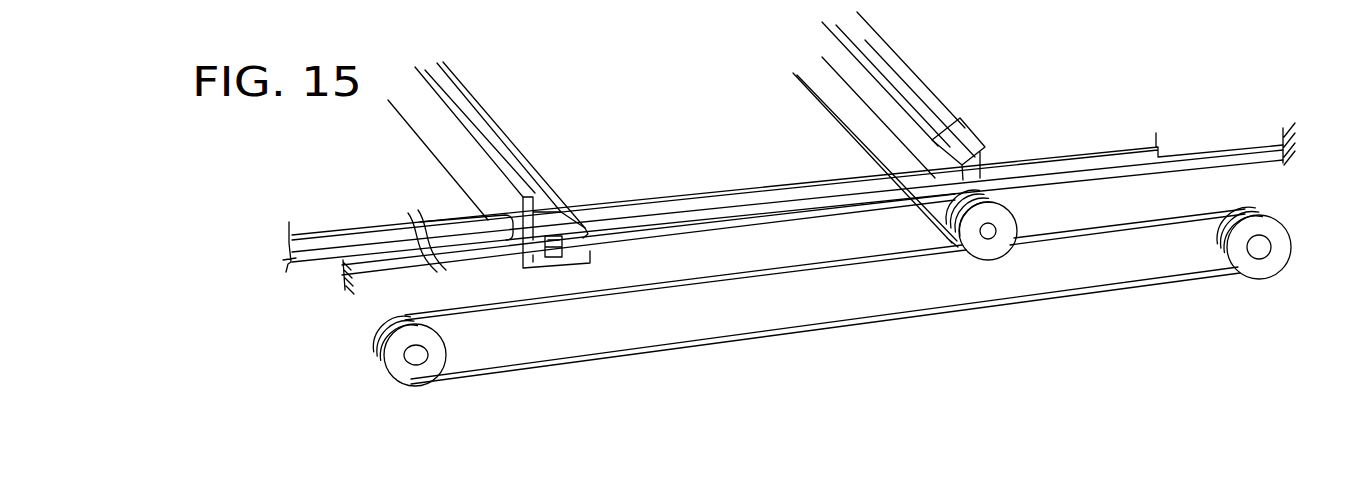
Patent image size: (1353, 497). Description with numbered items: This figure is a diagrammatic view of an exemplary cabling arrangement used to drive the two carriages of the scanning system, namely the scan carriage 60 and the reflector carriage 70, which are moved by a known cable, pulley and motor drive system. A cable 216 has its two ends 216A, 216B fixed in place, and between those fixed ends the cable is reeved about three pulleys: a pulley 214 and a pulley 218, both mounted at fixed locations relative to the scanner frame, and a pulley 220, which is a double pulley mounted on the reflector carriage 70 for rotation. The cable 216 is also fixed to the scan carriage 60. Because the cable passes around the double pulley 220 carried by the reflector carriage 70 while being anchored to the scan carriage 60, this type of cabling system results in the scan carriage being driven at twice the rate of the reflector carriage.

The scan carriage 60 is at (432, 141).
The reflector carriage 70 is at (958, 120).
The pulley 214 is at (394, 375).
The cable 216 is at (815, 323).
The cable end 216A is at (1273, 152).
The cable end 216B is at (352, 270).
The pulley 218 is at (1257, 275).
The double pulley 220 is at (995, 248).